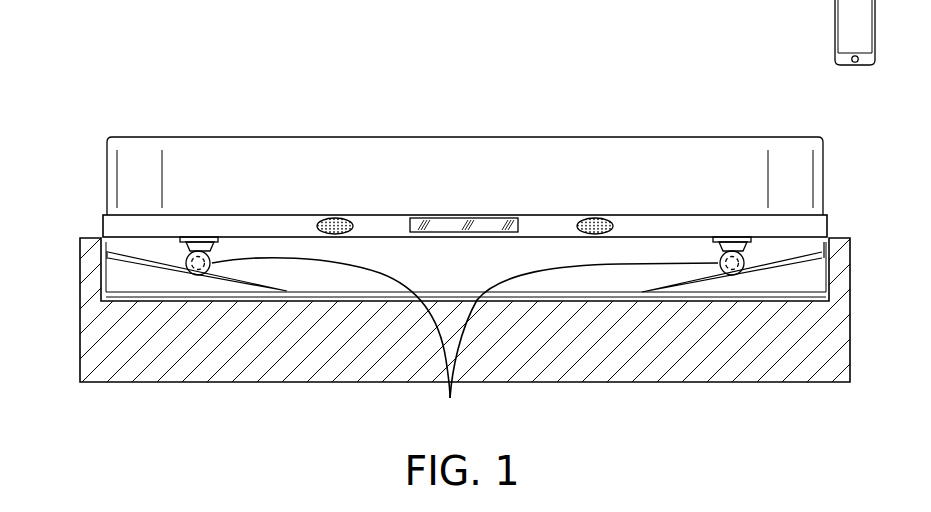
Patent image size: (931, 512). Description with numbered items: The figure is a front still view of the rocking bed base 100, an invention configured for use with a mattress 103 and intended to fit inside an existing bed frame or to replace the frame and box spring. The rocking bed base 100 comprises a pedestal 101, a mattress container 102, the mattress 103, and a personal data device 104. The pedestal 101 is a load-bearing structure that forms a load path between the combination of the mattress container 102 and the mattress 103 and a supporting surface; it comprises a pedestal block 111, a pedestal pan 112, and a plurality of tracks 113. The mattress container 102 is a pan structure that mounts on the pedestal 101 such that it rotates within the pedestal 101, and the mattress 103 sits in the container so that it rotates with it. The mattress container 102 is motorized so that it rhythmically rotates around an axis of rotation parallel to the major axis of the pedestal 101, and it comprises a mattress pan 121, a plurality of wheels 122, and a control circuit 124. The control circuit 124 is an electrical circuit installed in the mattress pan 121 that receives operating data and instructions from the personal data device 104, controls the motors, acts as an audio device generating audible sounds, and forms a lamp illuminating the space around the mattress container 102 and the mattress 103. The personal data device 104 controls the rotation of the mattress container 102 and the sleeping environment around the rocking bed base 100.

The rocking bed base 100 is at (123, 80).
The pedestal 101 is at (850, 335).
The mattress container 102 is at (827, 222).
The mattress 103 is at (823, 183).
The personal data device 104 is at (843, 30).
The pedestal block 111 is at (693, 360).
The pedestal pan 112 is at (807, 278).
The tracks 113 is at (145, 255).
The mattress pan 121 is at (253, 223).
The wheels 122 is at (465, 348).
The control circuit 124 is at (618, 208).